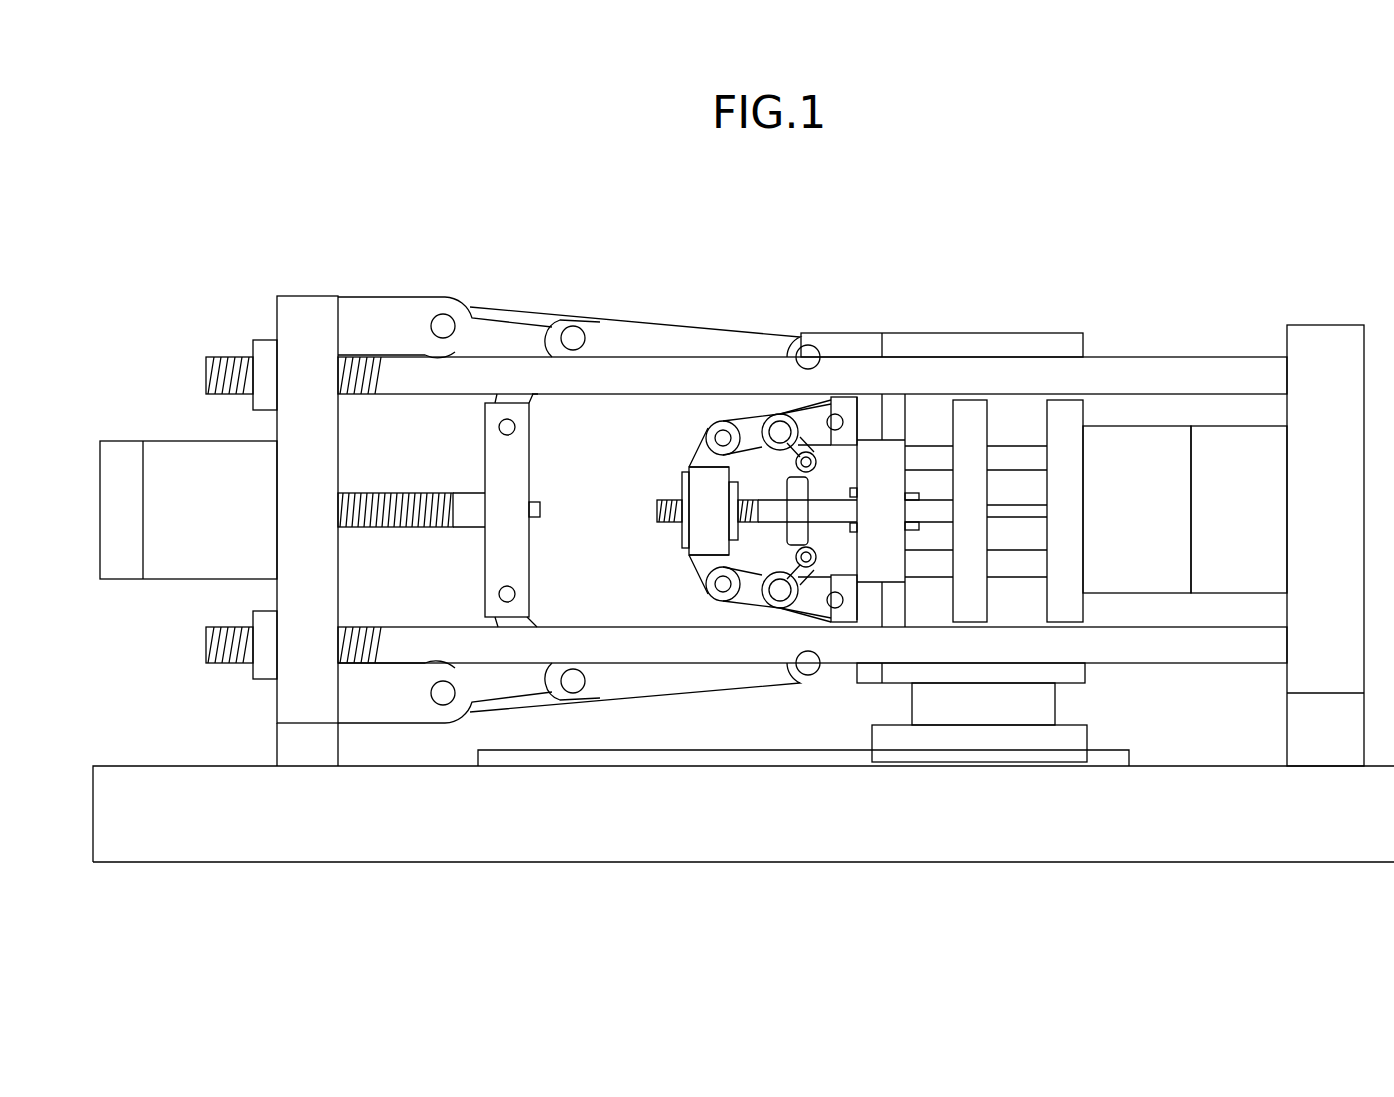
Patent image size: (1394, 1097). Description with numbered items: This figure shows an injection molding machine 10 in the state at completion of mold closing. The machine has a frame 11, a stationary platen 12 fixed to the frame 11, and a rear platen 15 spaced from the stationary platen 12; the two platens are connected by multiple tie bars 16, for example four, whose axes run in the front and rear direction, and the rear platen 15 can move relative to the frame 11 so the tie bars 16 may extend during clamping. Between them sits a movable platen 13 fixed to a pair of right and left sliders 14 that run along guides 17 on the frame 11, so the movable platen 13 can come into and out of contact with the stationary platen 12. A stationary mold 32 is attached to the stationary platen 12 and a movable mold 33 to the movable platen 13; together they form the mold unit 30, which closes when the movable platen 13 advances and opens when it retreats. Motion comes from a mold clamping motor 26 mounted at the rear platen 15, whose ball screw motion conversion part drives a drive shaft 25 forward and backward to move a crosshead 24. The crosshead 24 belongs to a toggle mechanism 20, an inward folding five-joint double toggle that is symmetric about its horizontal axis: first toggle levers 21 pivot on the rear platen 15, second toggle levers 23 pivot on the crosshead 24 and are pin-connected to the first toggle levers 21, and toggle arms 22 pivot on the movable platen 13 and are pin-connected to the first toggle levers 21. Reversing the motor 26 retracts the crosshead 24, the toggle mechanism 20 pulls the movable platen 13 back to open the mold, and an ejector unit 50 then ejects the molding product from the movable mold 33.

The injection molding machine 10 is at (146, 185).
The frame 11 is at (1355, 864).
The stationary platen 12 is at (1327, 328).
The movable platen 13 is at (988, 340).
The slider 14 is at (1077, 738).
The rear platen 15 is at (311, 300).
The tie bar 16 is at (1262, 372).
The guide 17 is at (1123, 758).
The toggle mechanism 20 is at (606, 312).
The first toggle lever 21 is at (510, 322).
The toggle arm 22 is at (689, 325).
The second toggle lever 23 is at (535, 398).
The crosshead 24 is at (529, 470).
The feed screw 25 is at (466, 527).
The mold clamping motor 26 is at (165, 440).
The mold unit 30 is at (1238, 310).
The stationary mold 32 is at (1235, 447).
The movable mold 33 is at (1147, 447).
The ejector unit 50 is at (672, 481).